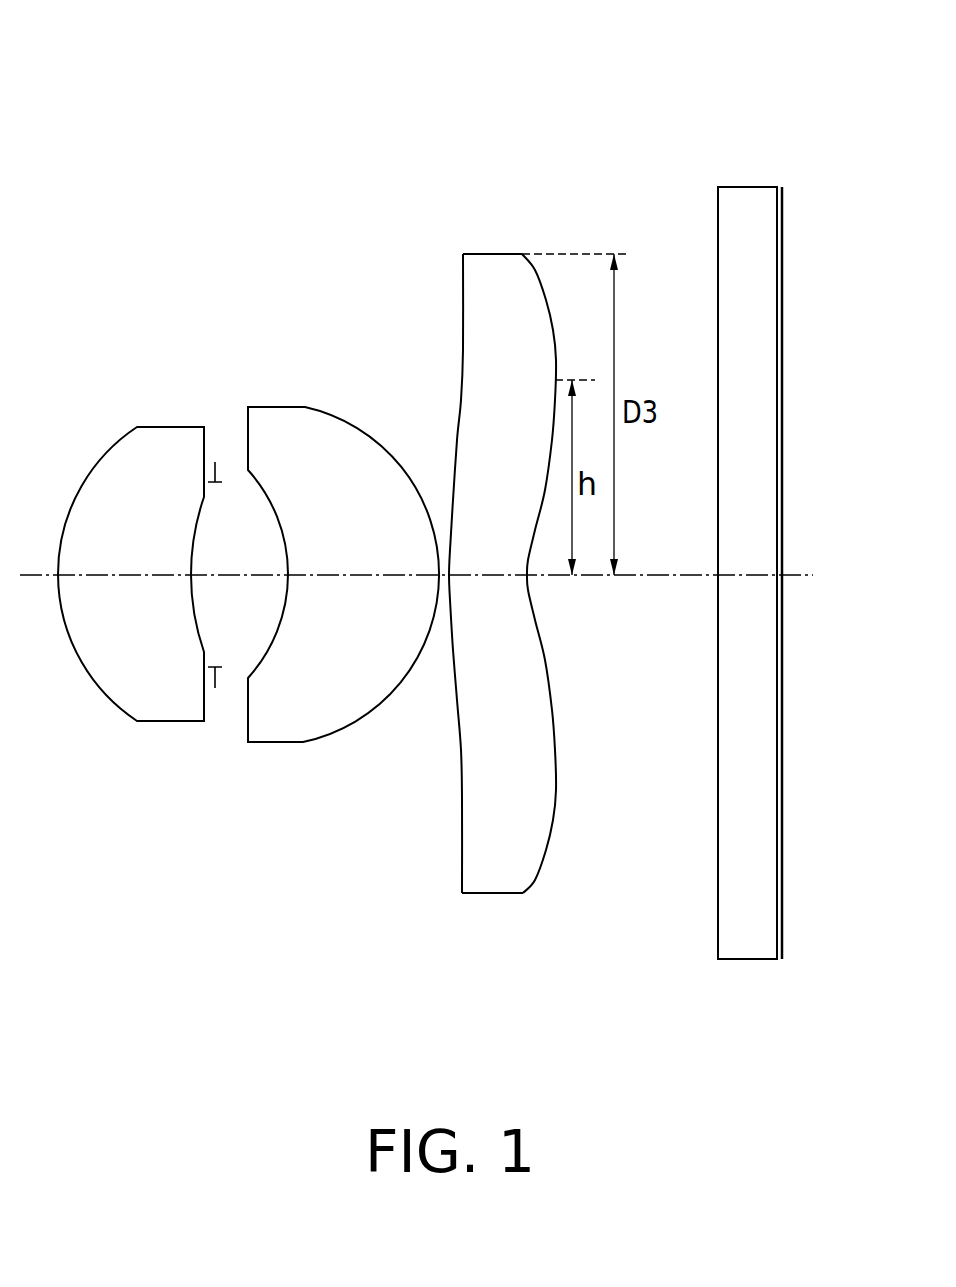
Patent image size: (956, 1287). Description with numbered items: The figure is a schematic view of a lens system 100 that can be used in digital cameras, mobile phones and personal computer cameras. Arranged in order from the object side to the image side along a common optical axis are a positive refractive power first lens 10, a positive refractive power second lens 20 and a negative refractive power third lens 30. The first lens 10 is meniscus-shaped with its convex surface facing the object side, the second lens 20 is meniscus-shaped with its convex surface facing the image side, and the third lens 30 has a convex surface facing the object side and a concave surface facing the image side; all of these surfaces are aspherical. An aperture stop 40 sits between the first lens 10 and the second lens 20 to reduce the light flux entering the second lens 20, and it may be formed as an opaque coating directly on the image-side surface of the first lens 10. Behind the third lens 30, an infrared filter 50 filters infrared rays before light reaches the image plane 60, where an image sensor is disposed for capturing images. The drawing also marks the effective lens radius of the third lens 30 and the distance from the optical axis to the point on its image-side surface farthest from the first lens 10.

The lens system 100 is at (176, 100).
The first lens 10 is at (170, 442).
The second lens 20 is at (284, 427).
The third lens 30 is at (503, 277).
The aperture stop 40 is at (217, 680).
The infrared filter 50 is at (750, 213).
The image plane 60 is at (782, 283).